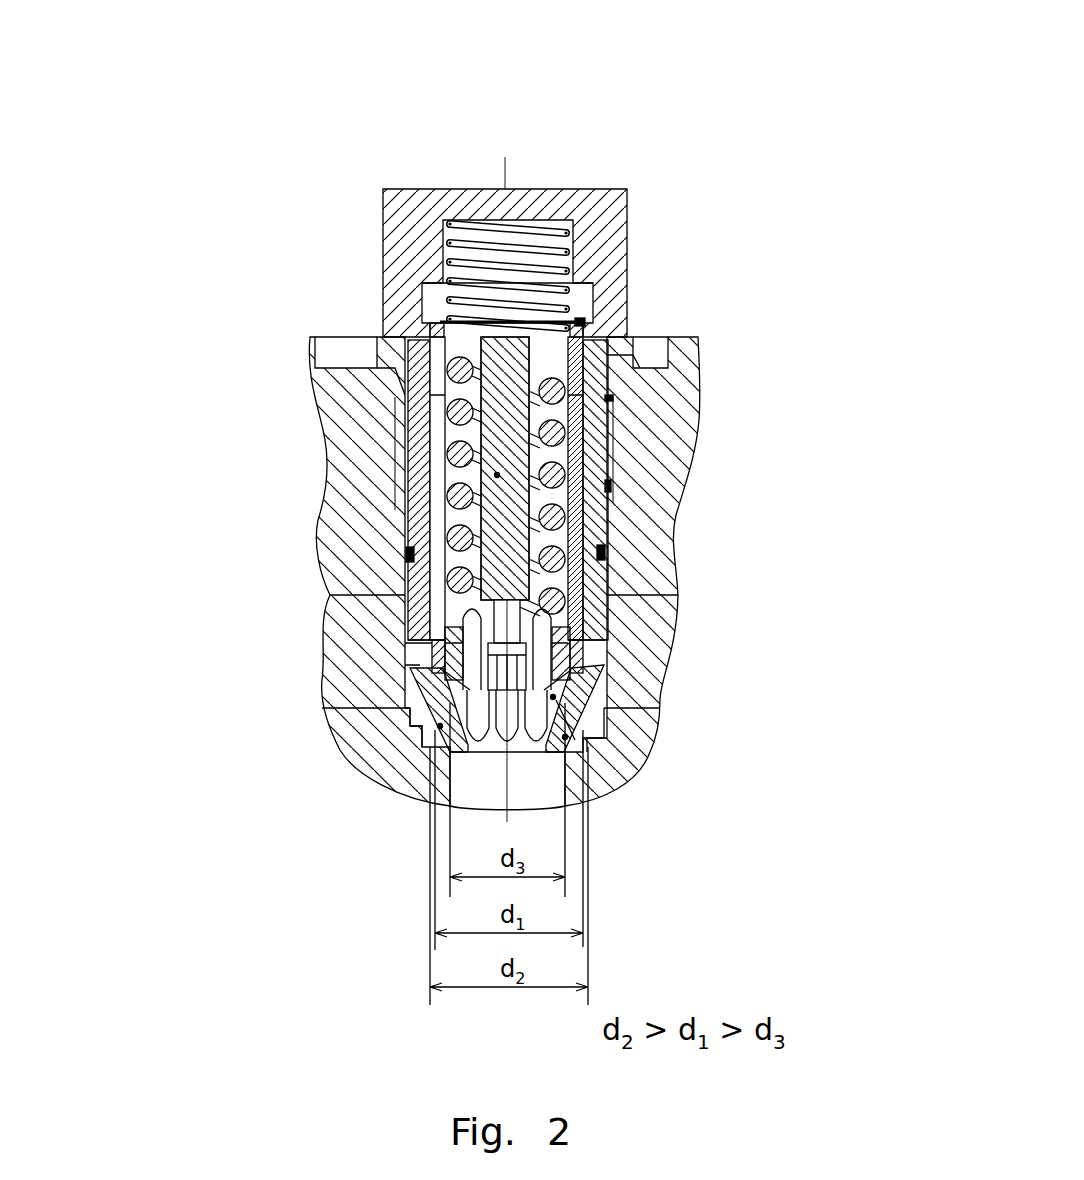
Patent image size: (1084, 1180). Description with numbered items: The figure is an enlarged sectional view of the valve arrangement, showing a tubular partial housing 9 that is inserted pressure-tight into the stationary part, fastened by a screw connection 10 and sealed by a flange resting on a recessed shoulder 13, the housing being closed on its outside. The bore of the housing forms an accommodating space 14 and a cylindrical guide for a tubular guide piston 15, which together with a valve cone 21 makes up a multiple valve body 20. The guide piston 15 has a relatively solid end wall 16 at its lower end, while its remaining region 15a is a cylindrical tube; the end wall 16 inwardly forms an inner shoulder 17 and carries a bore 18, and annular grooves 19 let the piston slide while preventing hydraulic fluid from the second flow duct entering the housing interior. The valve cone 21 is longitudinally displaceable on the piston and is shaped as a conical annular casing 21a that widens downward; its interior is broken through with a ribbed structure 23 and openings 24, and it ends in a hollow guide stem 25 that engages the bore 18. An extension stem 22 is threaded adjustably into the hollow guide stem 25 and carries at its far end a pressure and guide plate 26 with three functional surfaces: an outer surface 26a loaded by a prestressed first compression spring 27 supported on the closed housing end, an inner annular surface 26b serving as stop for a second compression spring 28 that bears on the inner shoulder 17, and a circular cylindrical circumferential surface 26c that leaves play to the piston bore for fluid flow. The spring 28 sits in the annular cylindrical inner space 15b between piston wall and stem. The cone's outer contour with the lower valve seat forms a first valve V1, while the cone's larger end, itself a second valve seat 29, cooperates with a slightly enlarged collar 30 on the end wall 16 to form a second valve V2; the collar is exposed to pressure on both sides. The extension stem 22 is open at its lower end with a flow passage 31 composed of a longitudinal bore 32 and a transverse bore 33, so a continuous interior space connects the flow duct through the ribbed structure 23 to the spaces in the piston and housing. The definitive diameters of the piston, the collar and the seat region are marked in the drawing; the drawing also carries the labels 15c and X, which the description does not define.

The tubular partial housing 9 is at (627, 207).
The screw connection 10 is at (323, 420).
The recessed shoulder 13 is at (355, 367).
The accommodating space 14 is at (310, 369).
The tubular guide piston 15 is at (423, 575).
The remaining region of the guide piston 15a is at (608, 487).
The annular cylindrical inner space 15b is at (605, 540).
The sealing ring 15c is at (428, 323).
The end wall 16 is at (430, 670).
The inner shoulder 17 is at (585, 627).
The bore 18 is at (427, 720).
The annular grooves 19 is at (400, 455).
The multiple valve body 20 is at (423, 533).
The valve cone 21 is at (598, 712).
The conical annular casing 21a is at (437, 708).
The extension stem 22 is at (423, 478).
The ribbed structure 23 is at (533, 720).
The openings 24 is at (573, 807).
The hollow guide stem 25 is at (603, 667).
The pressure and guide plate 26 is at (592, 323).
The outer surface 26a is at (538, 322).
The inner annular surface 26b is at (625, 367).
The circular cylindrical circumferential surface 26c is at (610, 336).
The first compression spring 27 is at (470, 268).
The second compression spring 28 is at (618, 440).
The second valve seat 29 is at (608, 690).
The collar 30 is at (430, 683).
The flow passage 31 is at (585, 642).
The longitudinal bore 32 is at (425, 655).
The transverse bore 33 is at (423, 600).
The first valve V1 is at (560, 740).
The second valve V2 is at (600, 680).
The detail region X is at (413, 730).